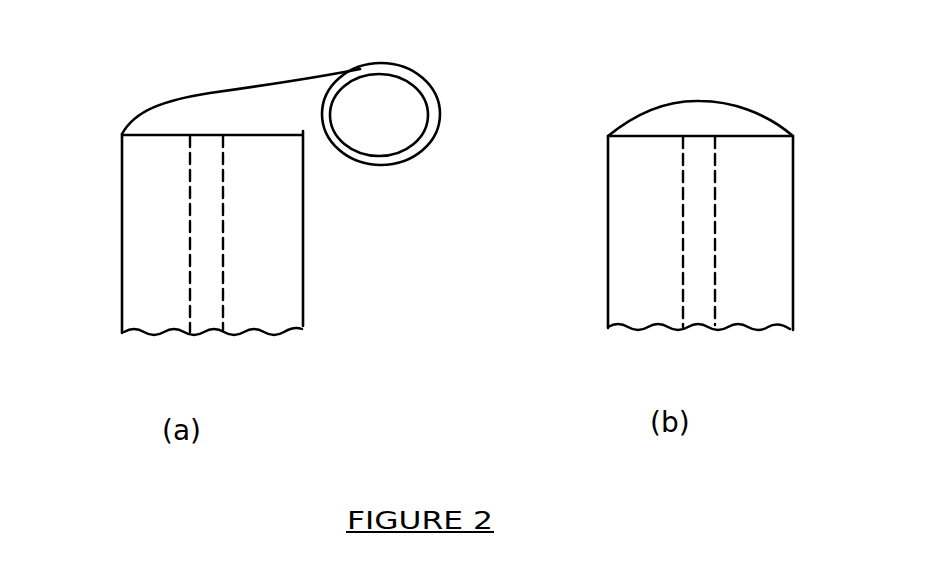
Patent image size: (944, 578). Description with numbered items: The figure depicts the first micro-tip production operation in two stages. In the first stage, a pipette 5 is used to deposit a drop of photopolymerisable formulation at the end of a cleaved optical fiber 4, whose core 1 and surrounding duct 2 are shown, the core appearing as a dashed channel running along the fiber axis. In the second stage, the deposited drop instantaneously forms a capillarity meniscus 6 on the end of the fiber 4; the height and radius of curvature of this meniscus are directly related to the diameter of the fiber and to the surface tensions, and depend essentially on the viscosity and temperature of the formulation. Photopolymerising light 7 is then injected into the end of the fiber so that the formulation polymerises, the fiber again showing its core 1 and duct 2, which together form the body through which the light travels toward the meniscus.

The core 1 is at (210, 292).
The duct 2 is at (153, 202).
The optical fiber 4 is at (248, 322).
The pipette 5 is at (387, 165).
The capillarity meniscus 6 is at (705, 118).
The photopolymerising light 7 is at (732, 278).